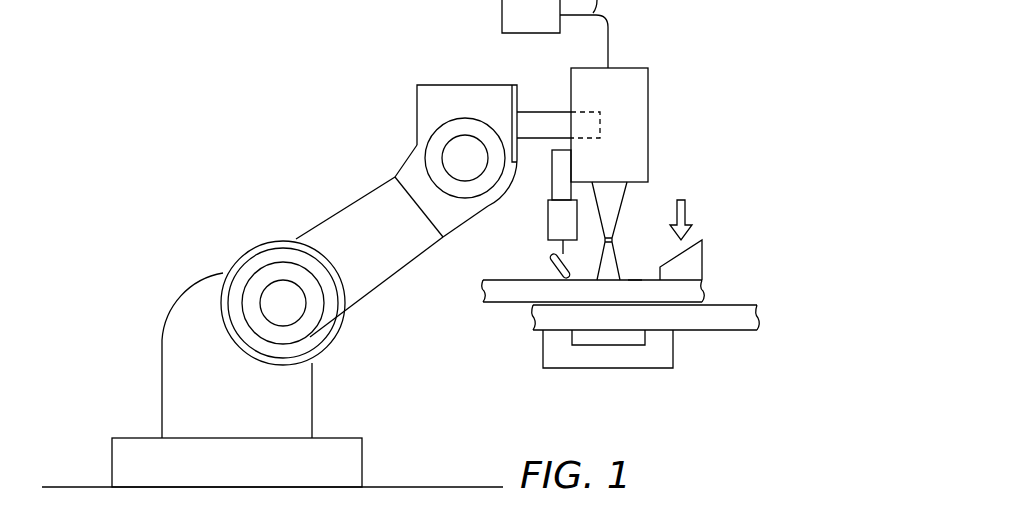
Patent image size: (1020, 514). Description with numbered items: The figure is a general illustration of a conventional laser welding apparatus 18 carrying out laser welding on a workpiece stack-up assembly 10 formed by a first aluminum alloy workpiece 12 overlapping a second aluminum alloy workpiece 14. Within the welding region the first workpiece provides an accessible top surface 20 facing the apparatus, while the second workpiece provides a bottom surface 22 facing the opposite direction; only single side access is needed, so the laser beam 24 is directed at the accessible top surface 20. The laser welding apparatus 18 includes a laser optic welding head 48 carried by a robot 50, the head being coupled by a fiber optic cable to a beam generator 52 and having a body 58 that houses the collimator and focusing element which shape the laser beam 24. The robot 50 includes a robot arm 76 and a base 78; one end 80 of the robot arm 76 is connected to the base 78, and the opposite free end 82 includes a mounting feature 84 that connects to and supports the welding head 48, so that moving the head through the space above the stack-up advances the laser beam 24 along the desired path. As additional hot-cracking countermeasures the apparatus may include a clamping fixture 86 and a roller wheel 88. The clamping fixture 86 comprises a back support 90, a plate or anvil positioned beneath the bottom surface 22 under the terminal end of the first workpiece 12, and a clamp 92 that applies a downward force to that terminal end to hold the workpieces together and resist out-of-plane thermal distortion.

The workpiece stack-up assembly 10 is at (774, 300).
The first aluminum alloy workpiece 12 is at (697, 292).
The second aluminum alloy workpiece 14 is at (747, 320).
The laser welding apparatus 18 is at (240, 182).
The accessible top surface 20 is at (637, 265).
The bottom surface 22 is at (627, 344).
The laser beam 24 is at (623, 200).
The laser optic welding head 48 is at (687, 83).
The robot 50 is at (400, 301).
The beam generator 52 is at (542, 23).
The body 58 is at (648, 128).
The robot arm 76 is at (370, 208).
The base 78 is at (140, 452).
The end of the robot arm 80 is at (277, 409).
The free end of the arm 82 is at (502, 102).
The mounting feature 84 is at (588, 112).
The clamping fixture 86 is at (712, 216).
The roller wheel 88 is at (526, 252).
The back support 90 is at (663, 349).
The clamp 92 is at (697, 257).